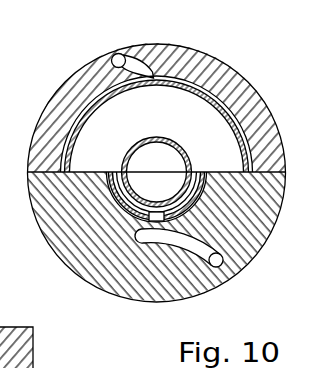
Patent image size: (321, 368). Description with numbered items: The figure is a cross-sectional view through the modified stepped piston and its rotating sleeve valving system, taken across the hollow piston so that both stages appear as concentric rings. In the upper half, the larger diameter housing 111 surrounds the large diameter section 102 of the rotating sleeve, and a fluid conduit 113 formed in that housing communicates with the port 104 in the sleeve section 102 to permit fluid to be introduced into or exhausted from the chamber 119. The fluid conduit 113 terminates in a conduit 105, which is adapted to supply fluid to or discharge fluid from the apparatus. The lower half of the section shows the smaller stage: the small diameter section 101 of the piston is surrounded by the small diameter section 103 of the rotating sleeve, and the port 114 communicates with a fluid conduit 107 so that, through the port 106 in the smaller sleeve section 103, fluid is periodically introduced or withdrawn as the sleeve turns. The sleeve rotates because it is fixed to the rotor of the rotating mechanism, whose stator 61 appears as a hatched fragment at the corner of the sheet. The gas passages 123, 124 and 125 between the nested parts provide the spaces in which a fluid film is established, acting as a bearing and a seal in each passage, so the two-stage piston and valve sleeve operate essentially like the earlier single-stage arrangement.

The stator 61 is at (33, 353).
The small diameter section of the piston 101 is at (123, 153).
The large diameter section of the rotating sleeve 102 is at (172, 83).
The small diameter section of the rotating sleeve 103 is at (120, 202).
The port 104 is at (156, 88).
The conduit 105 is at (113, 56).
The port 106 is at (152, 212).
The fluid conduit 107 is at (223, 262).
The outer housing periphery 111 is at (260, 244).
The fluid conduit 113 is at (127, 54).
The port 114 is at (192, 258).
The chamber 119 is at (221, 155).
The gas passage 123 is at (205, 194).
The gas passage 124 is at (251, 85).
The gas passage 125 is at (262, 226).